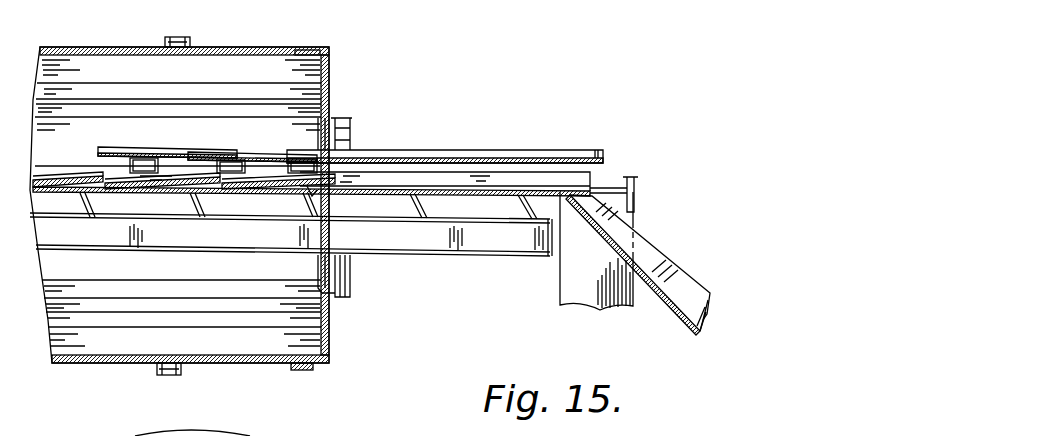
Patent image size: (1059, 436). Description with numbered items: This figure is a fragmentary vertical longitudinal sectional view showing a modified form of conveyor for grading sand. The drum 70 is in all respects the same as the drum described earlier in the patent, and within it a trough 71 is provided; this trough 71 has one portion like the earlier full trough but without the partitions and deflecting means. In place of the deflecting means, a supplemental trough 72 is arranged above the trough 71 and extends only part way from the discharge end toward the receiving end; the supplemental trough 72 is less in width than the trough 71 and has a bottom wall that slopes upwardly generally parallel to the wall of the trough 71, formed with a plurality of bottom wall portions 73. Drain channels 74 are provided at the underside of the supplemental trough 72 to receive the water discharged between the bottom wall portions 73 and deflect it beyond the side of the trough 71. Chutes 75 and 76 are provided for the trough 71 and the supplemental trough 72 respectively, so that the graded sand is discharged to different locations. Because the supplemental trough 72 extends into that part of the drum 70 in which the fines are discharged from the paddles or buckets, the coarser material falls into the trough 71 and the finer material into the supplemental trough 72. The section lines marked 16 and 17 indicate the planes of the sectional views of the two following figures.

The drum 70 is at (214, 50).
The trough 71 is at (398, 181).
The supplemental trough 72 is at (554, 153).
The bottom wall portions 73 is at (203, 153).
The drain channels 74 is at (141, 163).
The chute 75 is at (566, 288).
The chute 76 is at (658, 259).
The section line 16- 16 is at (698, 380).
The section line 17- 17 is at (478, 210).